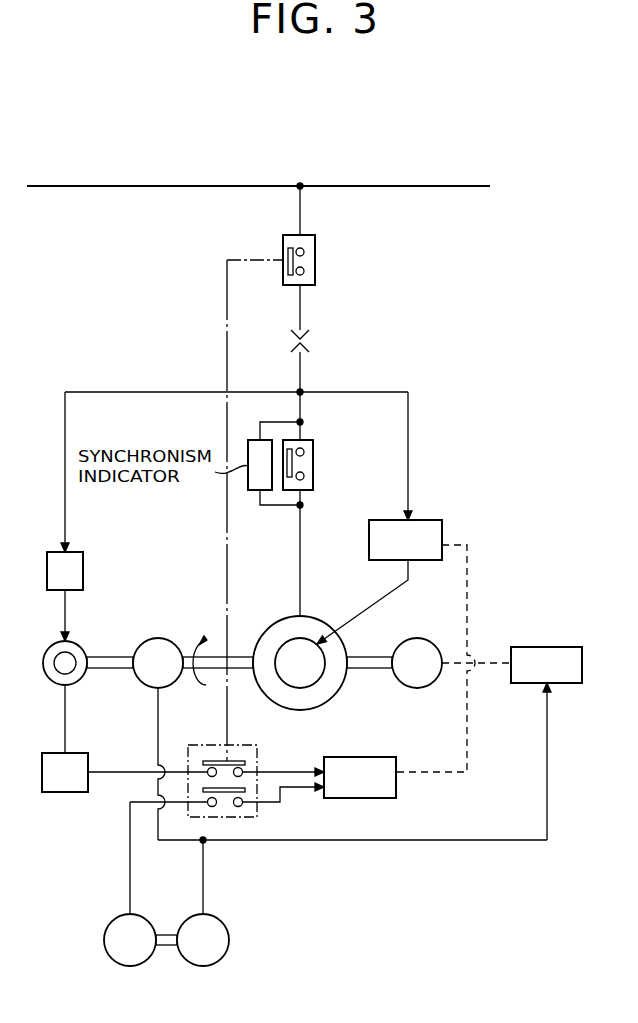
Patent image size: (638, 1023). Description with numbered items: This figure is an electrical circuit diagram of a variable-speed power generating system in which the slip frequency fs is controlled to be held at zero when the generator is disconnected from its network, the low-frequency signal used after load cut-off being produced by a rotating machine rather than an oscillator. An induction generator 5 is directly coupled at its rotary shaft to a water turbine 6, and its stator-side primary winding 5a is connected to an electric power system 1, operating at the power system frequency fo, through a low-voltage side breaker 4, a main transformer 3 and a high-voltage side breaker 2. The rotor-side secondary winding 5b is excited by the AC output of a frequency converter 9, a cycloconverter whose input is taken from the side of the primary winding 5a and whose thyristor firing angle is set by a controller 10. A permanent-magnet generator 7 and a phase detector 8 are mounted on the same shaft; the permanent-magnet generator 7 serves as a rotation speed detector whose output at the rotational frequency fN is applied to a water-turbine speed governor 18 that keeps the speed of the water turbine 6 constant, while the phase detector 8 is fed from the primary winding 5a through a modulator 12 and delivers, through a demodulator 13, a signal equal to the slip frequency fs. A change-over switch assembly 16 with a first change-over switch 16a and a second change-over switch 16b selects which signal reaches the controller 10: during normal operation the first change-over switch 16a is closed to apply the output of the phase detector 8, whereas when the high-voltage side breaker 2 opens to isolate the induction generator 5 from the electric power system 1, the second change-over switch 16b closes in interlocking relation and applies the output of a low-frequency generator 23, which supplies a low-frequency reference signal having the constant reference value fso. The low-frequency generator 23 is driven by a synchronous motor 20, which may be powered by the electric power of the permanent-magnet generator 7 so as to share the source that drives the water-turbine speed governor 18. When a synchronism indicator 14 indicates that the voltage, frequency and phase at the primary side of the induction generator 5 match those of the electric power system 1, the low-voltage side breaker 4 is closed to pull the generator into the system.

The electric power system 1 is at (427, 186).
The high-voltage side breaker 2 is at (315, 264).
The main transformer 3 is at (316, 343).
The low-voltage side breaker 4 is at (313, 466).
The induction generator 5 is at (307, 651).
The primary winding 5a is at (323, 620).
The secondary winding 5b is at (318, 681).
The water turbine 6 is at (422, 638).
The permanent-magnet generator 7 is at (157, 638).
The phase detector 8 is at (82, 647).
The frequency converter 9 is at (430, 520).
The controller 10 is at (387, 757).
The modulator 12 is at (74, 550).
The demodulator 13 is at (72, 793).
The synchronism indicator 14 is at (262, 490).
The change-over switch assembly 16 is at (236, 770).
The first change-over switch 16a is at (216, 760).
The second change-over switch 16b is at (228, 794).
The water-turbine speed governor 18 is at (568, 647).
The synchronous motor 20 is at (222, 960).
The low-frequency generator 23 is at (113, 961).
The power system frequency fo is at (302, 562).
The rotational frequency fN is at (202, 649).
The slip frequency fs is at (67, 712).
The constant reference value fso is at (132, 860).